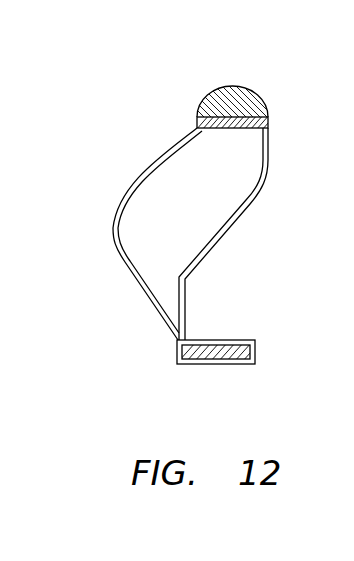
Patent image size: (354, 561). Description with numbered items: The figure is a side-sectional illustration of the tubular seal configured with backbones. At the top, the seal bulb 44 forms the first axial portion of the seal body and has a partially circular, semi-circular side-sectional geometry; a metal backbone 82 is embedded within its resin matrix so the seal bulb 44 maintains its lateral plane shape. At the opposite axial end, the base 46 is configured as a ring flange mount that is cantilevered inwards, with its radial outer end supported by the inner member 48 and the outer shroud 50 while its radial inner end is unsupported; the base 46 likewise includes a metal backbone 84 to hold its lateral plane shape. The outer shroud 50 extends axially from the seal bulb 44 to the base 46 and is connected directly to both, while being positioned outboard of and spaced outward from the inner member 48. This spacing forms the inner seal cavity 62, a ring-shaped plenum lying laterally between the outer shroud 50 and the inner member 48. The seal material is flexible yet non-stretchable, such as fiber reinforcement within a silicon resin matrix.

The seal bulb 44 is at (246, 95).
The metal backbone 82 is at (270, 113).
The inner member 48 is at (232, 228).
The outer shroud 50 is at (118, 257).
The inner seal cavity 62 is at (190, 223).
The base 46 is at (197, 364).
The metal backbone 84 is at (235, 364).